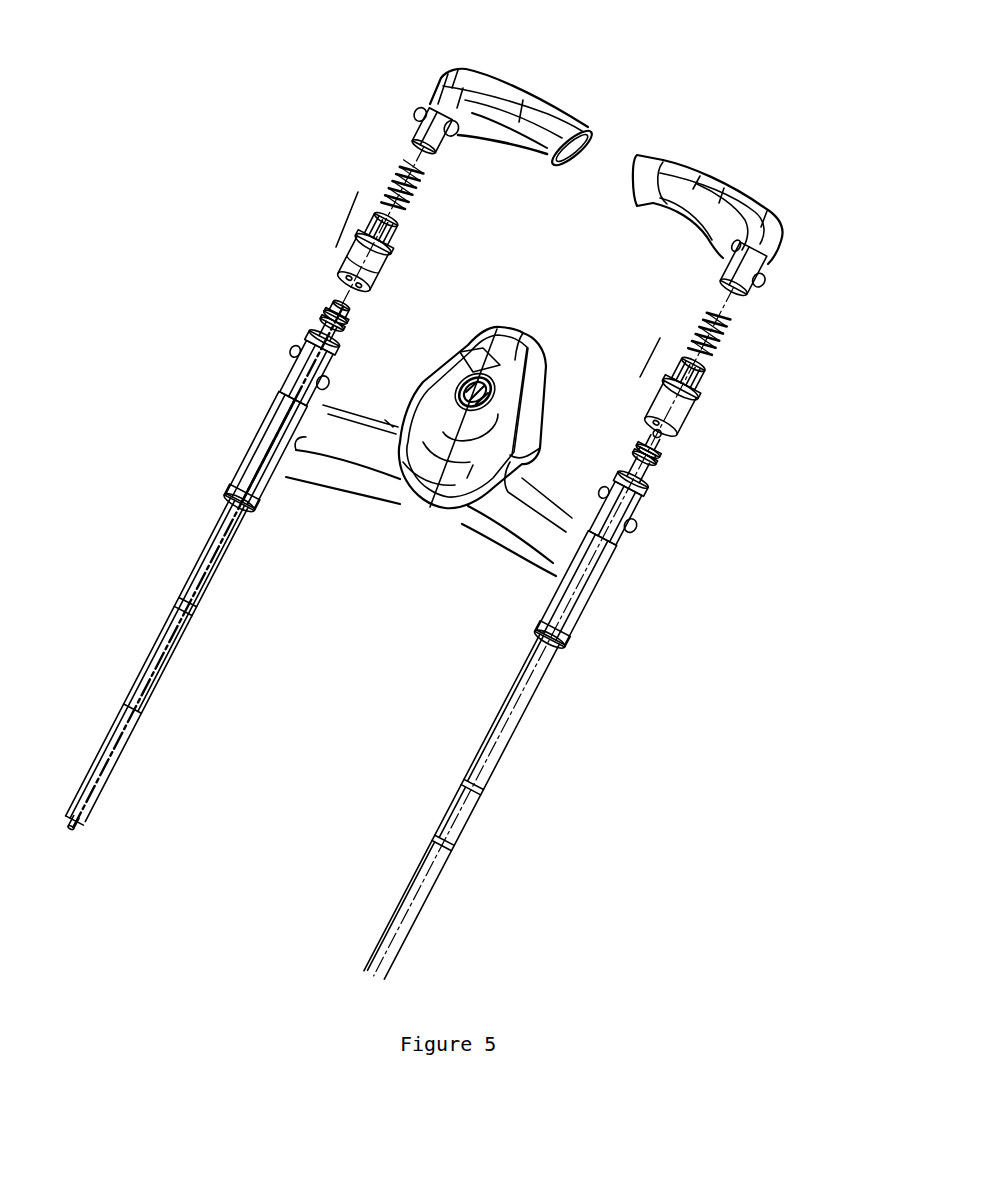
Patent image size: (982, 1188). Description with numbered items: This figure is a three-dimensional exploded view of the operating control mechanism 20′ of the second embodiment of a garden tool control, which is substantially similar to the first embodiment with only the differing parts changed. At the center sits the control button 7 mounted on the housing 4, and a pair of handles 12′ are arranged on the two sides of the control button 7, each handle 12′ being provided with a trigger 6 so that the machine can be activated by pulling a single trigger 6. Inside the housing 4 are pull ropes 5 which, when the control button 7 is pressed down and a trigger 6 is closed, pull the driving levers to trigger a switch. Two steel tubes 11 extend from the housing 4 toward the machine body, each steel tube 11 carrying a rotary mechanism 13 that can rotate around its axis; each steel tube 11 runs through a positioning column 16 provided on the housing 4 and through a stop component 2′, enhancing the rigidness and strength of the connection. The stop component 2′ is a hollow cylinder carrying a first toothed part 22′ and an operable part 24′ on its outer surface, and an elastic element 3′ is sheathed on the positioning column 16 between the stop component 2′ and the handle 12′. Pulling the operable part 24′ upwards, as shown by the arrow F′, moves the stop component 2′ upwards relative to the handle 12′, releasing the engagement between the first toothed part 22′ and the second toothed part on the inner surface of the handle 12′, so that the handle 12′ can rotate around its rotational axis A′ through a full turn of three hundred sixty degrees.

The handle 12′ is at (442, 85).
The trigger 6 is at (497, 133).
The elastic element 3′ is at (400, 173).
The rotational axis A′ is at (420, 150).
The first toothed part 22′ is at (372, 218).
The arrow F′ is at (508, 282).
The stop component 2′ is at (338, 262).
The operable part 24′ is at (397, 247).
The pull rope 5 is at (350, 305).
The positioning column 16 is at (330, 308).
The operating control mechanism 20′ is at (670, 455).
The control button 7 is at (495, 376).
The housing 4 is at (340, 435).
The rotary mechanism 13 is at (250, 462).
The steel tube 11 is at (217, 547).